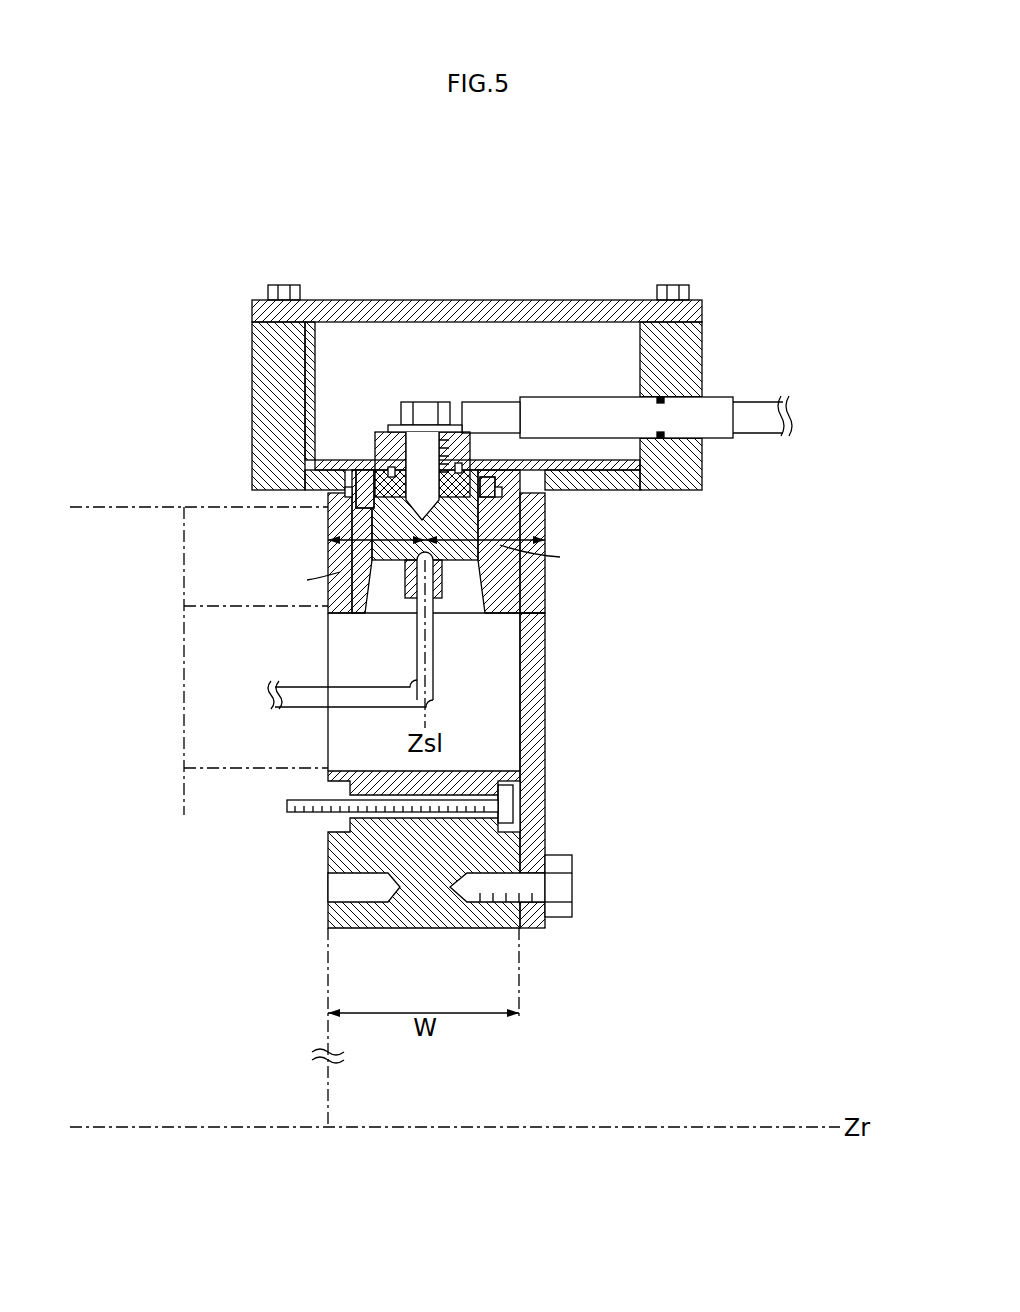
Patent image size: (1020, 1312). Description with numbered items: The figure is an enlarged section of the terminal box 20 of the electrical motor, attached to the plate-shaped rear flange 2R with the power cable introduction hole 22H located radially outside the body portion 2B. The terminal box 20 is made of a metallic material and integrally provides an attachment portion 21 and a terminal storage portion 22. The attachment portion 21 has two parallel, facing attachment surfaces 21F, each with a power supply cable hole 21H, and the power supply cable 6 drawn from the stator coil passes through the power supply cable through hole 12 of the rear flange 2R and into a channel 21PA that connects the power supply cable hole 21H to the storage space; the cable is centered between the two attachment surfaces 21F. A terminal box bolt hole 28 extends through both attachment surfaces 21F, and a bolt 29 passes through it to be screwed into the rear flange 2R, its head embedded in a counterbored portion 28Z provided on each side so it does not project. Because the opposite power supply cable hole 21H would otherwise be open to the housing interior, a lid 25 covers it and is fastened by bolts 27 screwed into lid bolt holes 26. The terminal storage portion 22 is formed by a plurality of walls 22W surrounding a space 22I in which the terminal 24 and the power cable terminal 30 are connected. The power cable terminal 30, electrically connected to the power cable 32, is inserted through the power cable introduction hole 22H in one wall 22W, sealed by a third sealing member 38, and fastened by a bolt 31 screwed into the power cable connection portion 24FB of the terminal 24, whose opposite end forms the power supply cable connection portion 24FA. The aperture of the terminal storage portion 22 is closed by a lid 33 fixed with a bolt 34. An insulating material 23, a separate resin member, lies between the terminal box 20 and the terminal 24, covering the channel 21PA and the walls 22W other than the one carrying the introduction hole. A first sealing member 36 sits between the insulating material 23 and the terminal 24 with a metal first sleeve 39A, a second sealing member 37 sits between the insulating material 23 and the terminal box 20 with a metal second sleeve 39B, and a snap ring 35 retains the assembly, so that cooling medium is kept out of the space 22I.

The terminal box 20 is at (180, 200).
The attachment portion 21 is at (433, 728).
The attachment surface 21F is at (322, 548).
The power supply cable hole 21H is at (322, 636).
The channel 21PA is at (466, 600).
The terminal storage portion 22 is at (487, 381).
The wall 22W is at (262, 354).
The power cable introduction hole 22H is at (700, 410).
The space 22I is at (545, 338).
The insulating material 23 is at (625, 490).
The terminal 24 is at (485, 576).
The power supply cable connection portion 24FA is at (392, 605).
The power cable connection portion 24FB is at (500, 505).
The lid 25 is at (540, 740).
The lid bolt hole 26 is at (440, 928).
The bolt 27 is at (565, 888).
The terminal box bolt hole 28 is at (432, 849).
The counterbored portion 28Z is at (330, 808).
The bolt 29 is at (515, 803).
The power cable terminal 30 is at (627, 407).
The bolt 31 is at (426, 402).
The power cable 32 is at (765, 433).
The lid 33 is at (410, 300).
The bolt 34 is at (285, 284).
The snap ring 35 is at (378, 437).
The first sealing member 36 is at (360, 480).
The second sealing member 37 is at (345, 489).
The third sealing member 38 is at (662, 398).
The first sleeve 39A is at (464, 455).
The second sleeve 39B is at (358, 488).
The body portion 2B is at (127, 520).
The rear flange 2R is at (208, 520).
The power supply cable through hole 12 is at (200, 720).
The power supply cable 6 is at (303, 710).